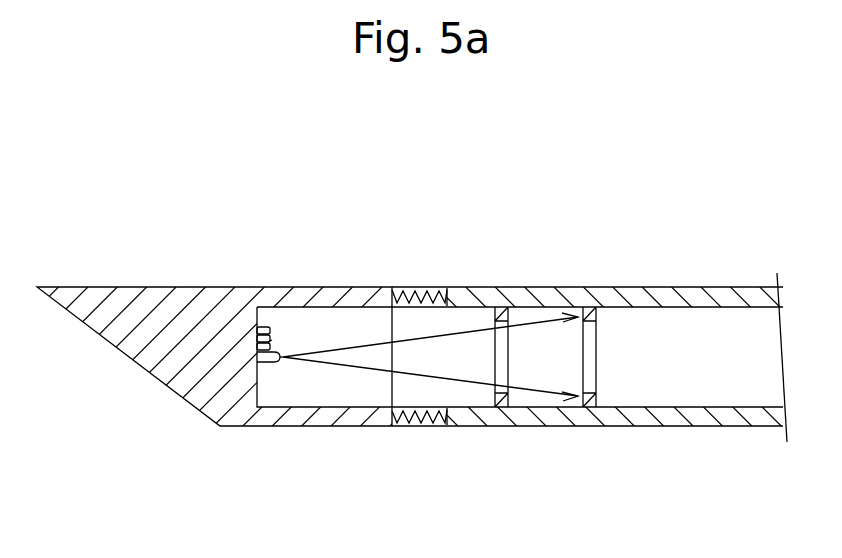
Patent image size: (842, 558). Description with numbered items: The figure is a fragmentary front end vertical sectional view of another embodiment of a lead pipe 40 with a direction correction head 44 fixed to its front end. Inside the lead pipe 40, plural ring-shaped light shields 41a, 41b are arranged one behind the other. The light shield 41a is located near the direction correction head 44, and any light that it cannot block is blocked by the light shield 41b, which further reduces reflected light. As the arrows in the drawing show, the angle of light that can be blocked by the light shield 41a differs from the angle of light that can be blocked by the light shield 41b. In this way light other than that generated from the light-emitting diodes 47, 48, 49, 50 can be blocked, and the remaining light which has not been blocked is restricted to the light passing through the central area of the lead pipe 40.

The lead pipe 40 is at (725, 427).
The light shield 41a is at (503, 400).
The light shield 41b is at (597, 396).
The direction correction head 44 is at (172, 280).
The light-emitting diode 47 is at (268, 362).
The light-emitting diode 48 is at (275, 349).
The light-emitting diode 49 is at (272, 340).
The light-emitting diode 50 is at (266, 328).